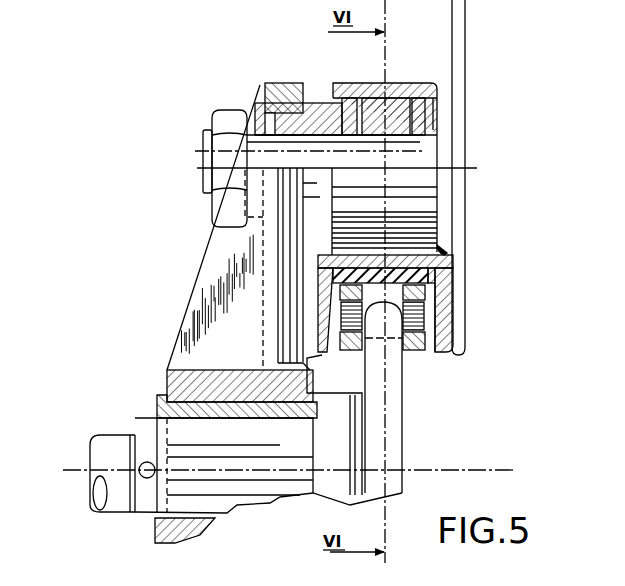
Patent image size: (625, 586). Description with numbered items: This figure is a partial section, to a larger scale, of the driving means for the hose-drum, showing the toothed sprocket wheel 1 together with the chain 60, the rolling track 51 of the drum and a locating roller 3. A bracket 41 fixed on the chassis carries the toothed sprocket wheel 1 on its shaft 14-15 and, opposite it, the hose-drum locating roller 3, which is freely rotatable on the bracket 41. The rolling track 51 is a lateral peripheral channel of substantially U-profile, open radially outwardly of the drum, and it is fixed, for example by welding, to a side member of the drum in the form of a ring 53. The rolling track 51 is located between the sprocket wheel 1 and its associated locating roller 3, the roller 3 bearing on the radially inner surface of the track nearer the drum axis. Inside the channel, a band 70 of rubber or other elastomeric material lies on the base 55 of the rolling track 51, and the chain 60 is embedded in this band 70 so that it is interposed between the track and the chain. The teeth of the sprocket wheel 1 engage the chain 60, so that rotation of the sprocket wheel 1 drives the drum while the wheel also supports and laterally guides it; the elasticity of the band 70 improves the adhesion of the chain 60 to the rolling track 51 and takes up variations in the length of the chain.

The toothed sprocket wheel 1 is at (393, 450).
The hose-drum locating roller 3 is at (363, 90).
The shaft 14-15 is at (115, 458).
The bracket 41 is at (237, 351).
The rolling track 51 is at (442, 343).
The ring 53 is at (457, 31).
The base of the rolling track 55 is at (393, 258).
The chain 60 is at (348, 352).
The band 70 is at (333, 277).